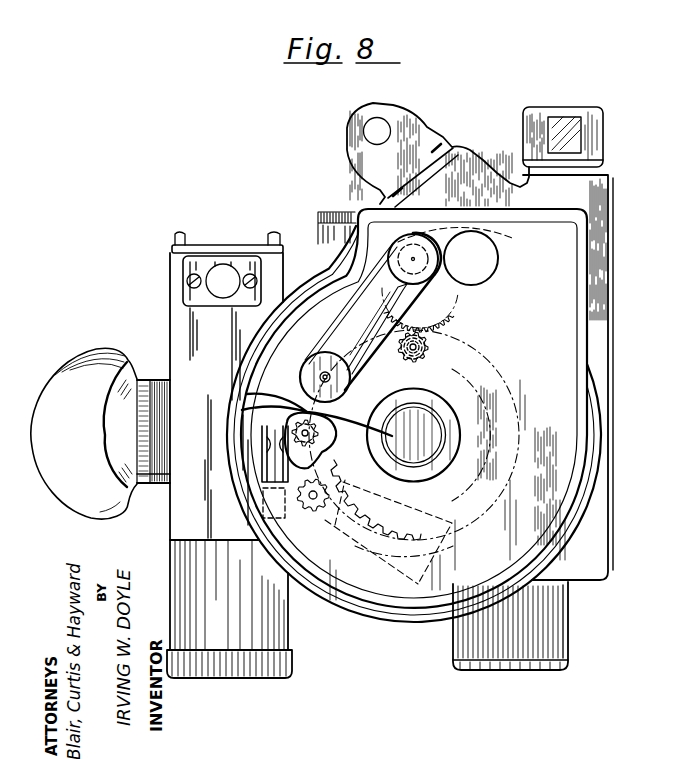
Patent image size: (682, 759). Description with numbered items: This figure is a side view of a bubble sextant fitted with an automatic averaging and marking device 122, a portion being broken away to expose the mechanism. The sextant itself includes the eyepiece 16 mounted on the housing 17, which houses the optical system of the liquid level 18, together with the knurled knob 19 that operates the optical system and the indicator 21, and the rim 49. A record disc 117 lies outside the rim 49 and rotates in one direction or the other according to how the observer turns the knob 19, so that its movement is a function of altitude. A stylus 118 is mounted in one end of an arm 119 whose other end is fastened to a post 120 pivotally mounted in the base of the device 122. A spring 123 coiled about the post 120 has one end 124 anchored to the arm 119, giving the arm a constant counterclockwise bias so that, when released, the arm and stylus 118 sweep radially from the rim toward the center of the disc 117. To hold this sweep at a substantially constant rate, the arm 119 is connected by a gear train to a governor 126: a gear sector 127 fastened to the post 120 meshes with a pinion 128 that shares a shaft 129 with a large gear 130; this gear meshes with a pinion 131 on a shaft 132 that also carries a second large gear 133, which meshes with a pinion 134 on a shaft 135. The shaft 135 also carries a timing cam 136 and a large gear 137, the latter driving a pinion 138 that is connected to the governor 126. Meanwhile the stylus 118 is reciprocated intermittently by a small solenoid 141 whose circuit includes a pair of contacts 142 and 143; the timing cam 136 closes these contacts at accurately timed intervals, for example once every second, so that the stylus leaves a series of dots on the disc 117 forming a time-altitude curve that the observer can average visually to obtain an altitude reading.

The eyepiece 16 is at (93, 350).
The housing 17 is at (172, 517).
The liquid level 18 is at (169, 268).
The knurled knob 19 is at (570, 639).
The indicator 21 is at (598, 124).
The rim 49 is at (598, 445).
The record disc 117 is at (552, 415).
The stylus 118 is at (320, 375).
The arm 119 is at (347, 302).
The post 120 is at (498, 233).
The automatic averaging and marking device 122 is at (320, 287).
The spring 123 is at (406, 240).
The end of spring 124 is at (403, 298).
The governor 126 is at (414, 576).
The gear sector 127 is at (470, 303).
The pinion 128 is at (430, 347).
The shaft 129 is at (430, 352).
The large gear 130 is at (468, 383).
The pinion 131 is at (317, 415).
The shaft 132 is at (366, 378).
The second large gear 133 is at (396, 490).
The pinion 134 is at (232, 382).
The shaft 135 is at (302, 432).
The timing cam 136 is at (290, 458).
The large gear 137 is at (324, 514).
The pinion 138 is at (391, 515).
The solenoid 141 is at (601, 377).
The contact 142 is at (262, 470).
The contact 143 is at (283, 474).